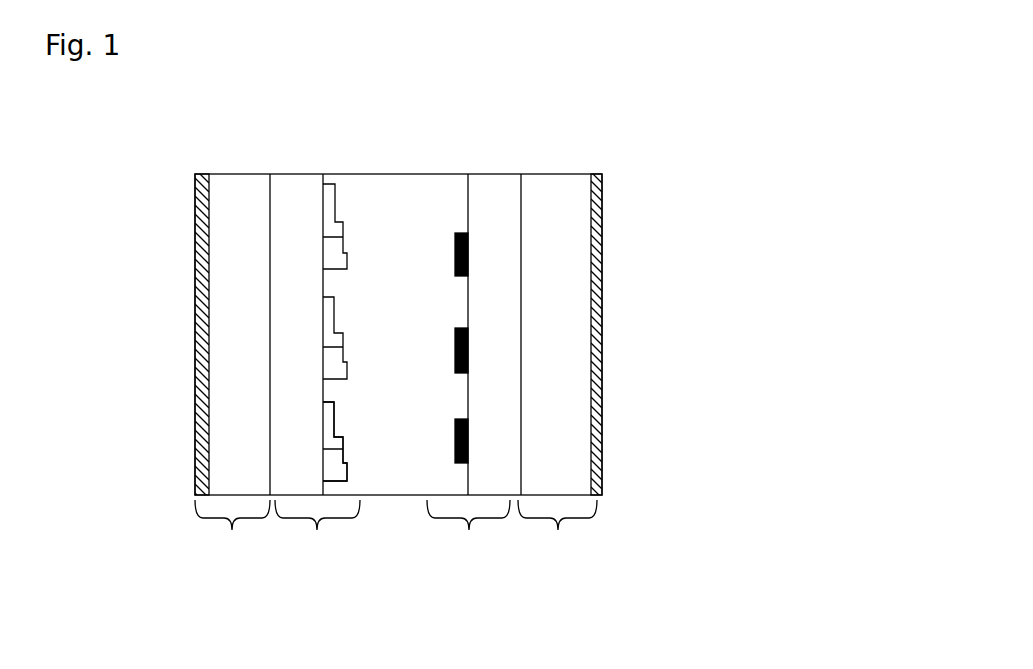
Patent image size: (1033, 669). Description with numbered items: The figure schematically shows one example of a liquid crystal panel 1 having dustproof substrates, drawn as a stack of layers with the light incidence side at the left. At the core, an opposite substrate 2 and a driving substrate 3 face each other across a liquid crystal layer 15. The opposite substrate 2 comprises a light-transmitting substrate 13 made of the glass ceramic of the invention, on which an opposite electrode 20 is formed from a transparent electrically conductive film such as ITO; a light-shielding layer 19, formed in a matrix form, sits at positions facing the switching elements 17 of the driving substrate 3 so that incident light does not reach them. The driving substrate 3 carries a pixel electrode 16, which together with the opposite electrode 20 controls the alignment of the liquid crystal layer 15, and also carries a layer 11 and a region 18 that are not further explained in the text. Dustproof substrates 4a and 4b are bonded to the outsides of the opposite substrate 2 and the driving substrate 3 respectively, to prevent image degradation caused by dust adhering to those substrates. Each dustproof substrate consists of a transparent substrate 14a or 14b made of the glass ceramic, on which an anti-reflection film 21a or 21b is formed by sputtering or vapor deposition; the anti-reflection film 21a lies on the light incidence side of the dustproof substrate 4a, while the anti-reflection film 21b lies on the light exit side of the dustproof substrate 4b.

The liquid crystal panel 1 is at (625, 272).
The opposite substrate 2 is at (468, 537).
The driving substrate 3 is at (317, 537).
The dustproof substrate 4a is at (557, 537).
The dustproof substrate 4b is at (232, 537).
The anode gas diffusion layer 11 is at (286, 208).
The light-transmitting substrate 13 is at (511, 42).
The transparent substrate 14a is at (546, 212).
The transparent substrate 14b is at (237, 200).
The liquid crystal layer 15 is at (405, 222).
The pixel electrode 16 is at (325, 413).
The switching element 17 is at (334, 466).
The cathode layer 18 is at (495, 212).
The light-shielding layer 19 is at (463, 463).
The opposite electrode 20 is at (460, 392).
The anti-reflection film 21a is at (602, 214).
The anti-reflection film 21b is at (208, 292).